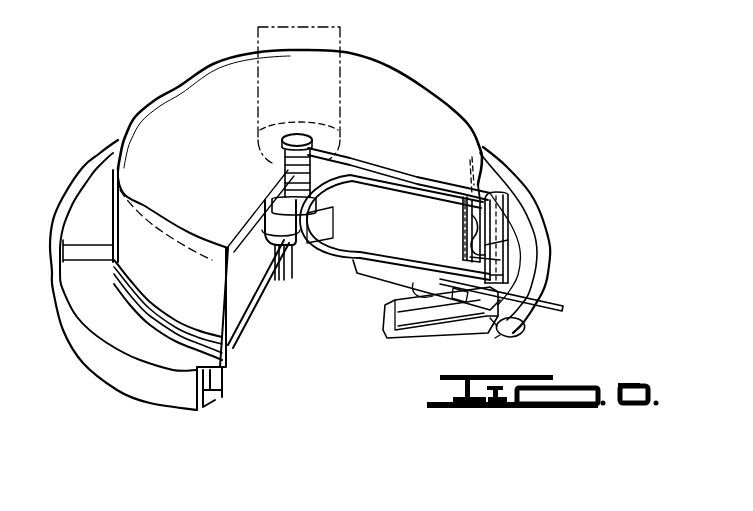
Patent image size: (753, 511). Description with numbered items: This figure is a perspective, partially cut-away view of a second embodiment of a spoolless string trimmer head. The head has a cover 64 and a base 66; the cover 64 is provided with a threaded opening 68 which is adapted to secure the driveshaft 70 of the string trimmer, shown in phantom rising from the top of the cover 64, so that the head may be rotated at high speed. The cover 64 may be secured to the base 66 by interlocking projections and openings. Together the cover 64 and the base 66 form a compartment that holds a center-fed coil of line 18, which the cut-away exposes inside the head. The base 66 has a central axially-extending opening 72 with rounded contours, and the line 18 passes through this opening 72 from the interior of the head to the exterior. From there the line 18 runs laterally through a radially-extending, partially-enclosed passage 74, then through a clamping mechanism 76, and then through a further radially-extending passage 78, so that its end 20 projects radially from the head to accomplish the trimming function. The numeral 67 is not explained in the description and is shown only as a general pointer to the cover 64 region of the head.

The center-fed coil of line 18 is at (347, 202).
The end of the line 20 is at (557, 298).
The cover 64 is at (158, 95).
The base 66 is at (167, 383).
The housing assembly 67 is at (480, 103).
The threaded opening 68 is at (293, 133).
The driveshaft 70 is at (342, 27).
The central axially-extending opening 72 is at (290, 248).
The radially-extending partially-enclosed passage 74 is at (380, 272).
The clamping mechanism 76 is at (517, 230).
The further radially-extending passage 78 is at (530, 320).